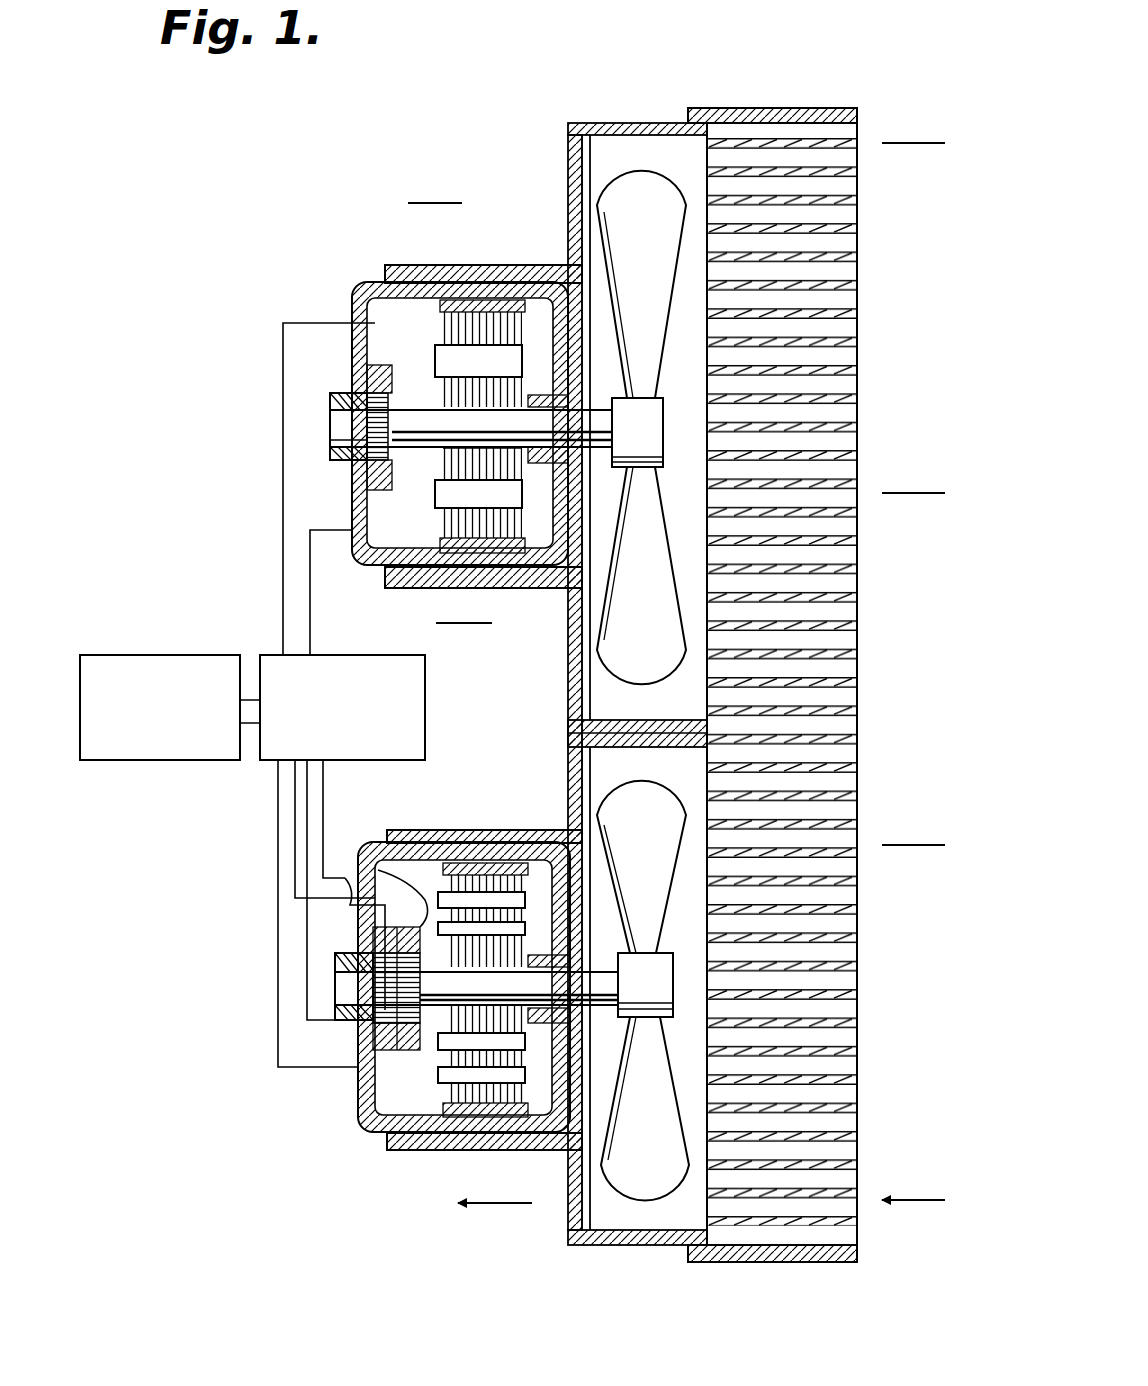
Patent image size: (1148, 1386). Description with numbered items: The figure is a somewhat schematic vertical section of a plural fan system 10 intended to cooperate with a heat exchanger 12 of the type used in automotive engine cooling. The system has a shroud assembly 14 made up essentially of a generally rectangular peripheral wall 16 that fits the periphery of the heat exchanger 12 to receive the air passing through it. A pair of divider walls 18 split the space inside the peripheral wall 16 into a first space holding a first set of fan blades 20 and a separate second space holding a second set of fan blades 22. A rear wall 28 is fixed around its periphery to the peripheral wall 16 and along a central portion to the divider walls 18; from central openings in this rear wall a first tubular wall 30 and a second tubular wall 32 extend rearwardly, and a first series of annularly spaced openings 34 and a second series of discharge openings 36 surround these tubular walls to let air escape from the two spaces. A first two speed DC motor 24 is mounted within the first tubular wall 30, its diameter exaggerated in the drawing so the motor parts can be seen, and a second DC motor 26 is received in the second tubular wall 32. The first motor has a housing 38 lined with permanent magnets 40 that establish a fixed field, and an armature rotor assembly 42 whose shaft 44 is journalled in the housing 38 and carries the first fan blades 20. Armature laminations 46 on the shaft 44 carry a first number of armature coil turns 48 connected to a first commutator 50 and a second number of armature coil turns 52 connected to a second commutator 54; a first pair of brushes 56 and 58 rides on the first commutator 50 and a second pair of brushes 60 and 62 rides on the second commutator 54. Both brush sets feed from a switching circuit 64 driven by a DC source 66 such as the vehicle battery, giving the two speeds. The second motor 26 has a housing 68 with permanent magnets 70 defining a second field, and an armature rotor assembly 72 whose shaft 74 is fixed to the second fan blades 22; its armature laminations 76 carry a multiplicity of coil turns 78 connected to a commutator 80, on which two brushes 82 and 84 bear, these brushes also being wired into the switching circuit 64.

The plural fan system 10 is at (800, 85).
The heat exchanger 12 is at (848, 252).
The shroud assembly 14 is at (568, 123).
The peripheral wall 16 is at (690, 108).
The divider walls 18 is at (582, 720).
The first set of fan blades 20 is at (622, 790).
The second set of fan blades 22 is at (605, 637).
The first two speed DC motor 24 is at (372, 1135).
The second DC motor 26 is at (356, 282).
The rear wall 28 is at (578, 136).
The first tubular wall 30 is at (445, 832).
The second tubular wall 32 is at (465, 268).
The first series of annularly spaced openings 34 is at (568, 748).
The second series of annularly spaced discharge openings 36 is at (562, 282).
The housing 38 is at (358, 1122).
The permanent magnets 40 is at (487, 862).
The armature rotor assembly 42 is at (355, 1028).
The shaft 44 is at (640, 960).
The armature laminations 46 is at (575, 1012).
The first armature coil turns 48 is at (525, 930).
The first commutator 50 is at (365, 950).
The second armature coil turns 52 is at (525, 902).
The second commutator 54 is at (360, 1000).
The first brush 56 is at (390, 860).
The first brush 58 is at (378, 1078).
The second brush 60 is at (380, 912).
The second brush 62 is at (365, 1060).
The switching circuit 64 is at (383, 628).
The DC source 66 is at (208, 663).
The housing 68 is at (370, 568).
The permanent magnets 70 is at (485, 300).
The armature rotor assembly 72 is at (340, 462).
The shaft 74 is at (637, 432).
The armature laminations 76 is at (513, 385).
The coil turns 78 is at (513, 355).
The commutator 80 is at (330, 413).
The brush 82 is at (360, 380).
The brush 84 is at (362, 480).